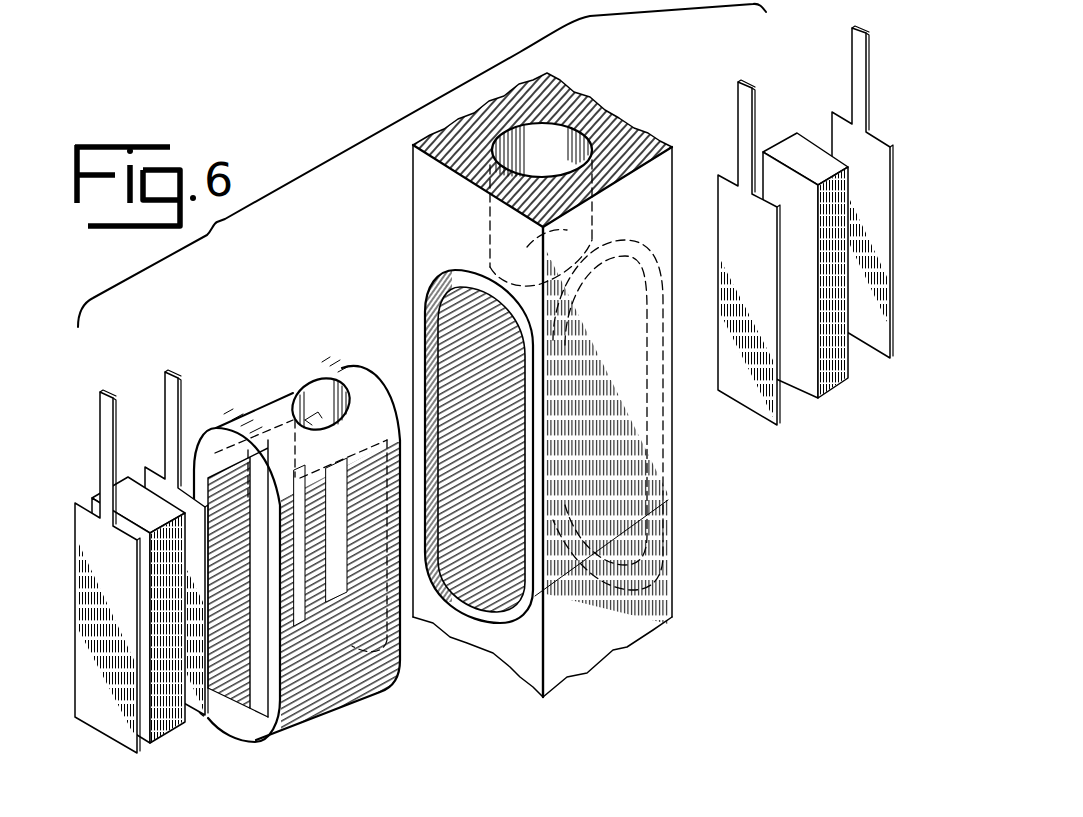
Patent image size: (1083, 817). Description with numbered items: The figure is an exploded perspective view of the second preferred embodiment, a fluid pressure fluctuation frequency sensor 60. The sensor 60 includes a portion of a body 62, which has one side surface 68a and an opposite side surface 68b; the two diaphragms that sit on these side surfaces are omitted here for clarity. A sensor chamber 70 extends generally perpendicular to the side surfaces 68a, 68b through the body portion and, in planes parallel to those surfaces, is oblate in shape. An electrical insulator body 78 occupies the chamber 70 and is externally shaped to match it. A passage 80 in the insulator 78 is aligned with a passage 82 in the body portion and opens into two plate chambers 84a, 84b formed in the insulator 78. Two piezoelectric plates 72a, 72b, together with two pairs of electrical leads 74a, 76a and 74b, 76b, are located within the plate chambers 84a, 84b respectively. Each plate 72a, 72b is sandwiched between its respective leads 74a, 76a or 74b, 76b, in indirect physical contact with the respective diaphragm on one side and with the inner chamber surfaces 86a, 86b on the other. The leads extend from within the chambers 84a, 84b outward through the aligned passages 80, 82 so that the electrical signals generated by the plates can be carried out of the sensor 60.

The fluid pressure fluctuation frequency sensor 60 is at (704, 588).
The body 62 is at (425, 197).
The side surface of the body 68a is at (600, 102).
The opposite side surface of the body 68b is at (530, 670).
The sensor chamber 70 is at (457, 322).
The passage in the body portion 82 is at (555, 127).
The electrical insulator body 78 is at (362, 393).
The passage in the insulator 80 is at (313, 387).
The plate chamber 84a is at (337, 632).
The plate chamber 84b is at (275, 690).
The inner chamber surface 86a is at (370, 615).
The inner chamber surface 86b is at (255, 662).
The piezoelectric plate 72a is at (838, 382).
The piezoelectric plate 72b is at (168, 727).
The electrical lead 74a is at (868, 148).
The electrical lead 74b is at (100, 414).
The electrical lead 76a is at (743, 108).
The electrical lead 76b is at (168, 392).